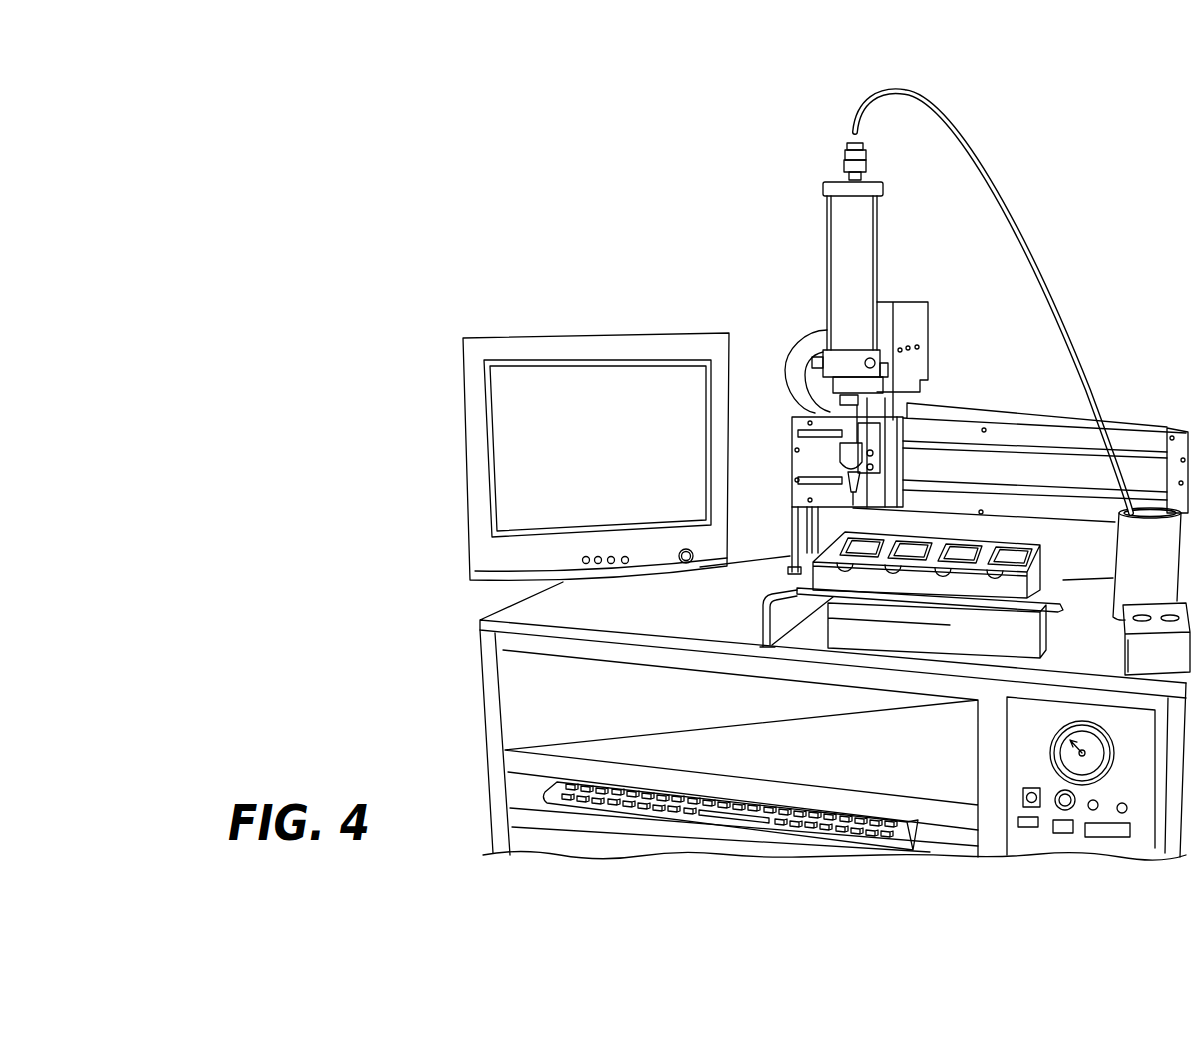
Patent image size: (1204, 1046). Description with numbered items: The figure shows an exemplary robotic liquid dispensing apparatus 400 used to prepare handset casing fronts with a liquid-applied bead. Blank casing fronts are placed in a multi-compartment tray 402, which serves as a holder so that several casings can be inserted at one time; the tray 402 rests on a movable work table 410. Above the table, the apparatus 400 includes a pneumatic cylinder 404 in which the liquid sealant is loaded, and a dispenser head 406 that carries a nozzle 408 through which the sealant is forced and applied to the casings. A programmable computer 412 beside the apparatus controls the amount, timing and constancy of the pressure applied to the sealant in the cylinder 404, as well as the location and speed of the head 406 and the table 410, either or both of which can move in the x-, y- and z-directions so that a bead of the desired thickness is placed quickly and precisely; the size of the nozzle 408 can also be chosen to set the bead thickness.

The robotic liquid dispensing apparatus 400 is at (1063, 158).
The multi-compartment tray 402 is at (872, 582).
The pneumatic cylinder 404 is at (866, 261).
The dispenser head 406 is at (900, 467).
The nozzle 408 is at (797, 492).
The movable work table 410 is at (1018, 605).
The programmable computer 412 is at (523, 338).